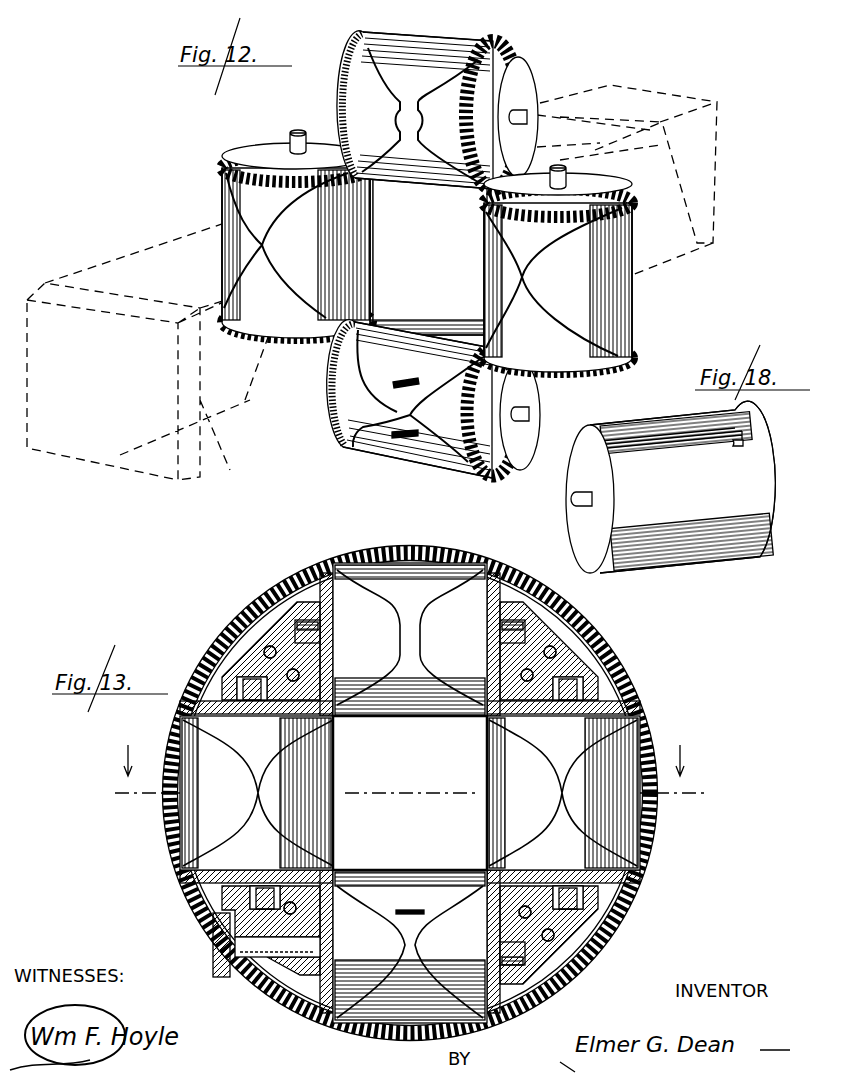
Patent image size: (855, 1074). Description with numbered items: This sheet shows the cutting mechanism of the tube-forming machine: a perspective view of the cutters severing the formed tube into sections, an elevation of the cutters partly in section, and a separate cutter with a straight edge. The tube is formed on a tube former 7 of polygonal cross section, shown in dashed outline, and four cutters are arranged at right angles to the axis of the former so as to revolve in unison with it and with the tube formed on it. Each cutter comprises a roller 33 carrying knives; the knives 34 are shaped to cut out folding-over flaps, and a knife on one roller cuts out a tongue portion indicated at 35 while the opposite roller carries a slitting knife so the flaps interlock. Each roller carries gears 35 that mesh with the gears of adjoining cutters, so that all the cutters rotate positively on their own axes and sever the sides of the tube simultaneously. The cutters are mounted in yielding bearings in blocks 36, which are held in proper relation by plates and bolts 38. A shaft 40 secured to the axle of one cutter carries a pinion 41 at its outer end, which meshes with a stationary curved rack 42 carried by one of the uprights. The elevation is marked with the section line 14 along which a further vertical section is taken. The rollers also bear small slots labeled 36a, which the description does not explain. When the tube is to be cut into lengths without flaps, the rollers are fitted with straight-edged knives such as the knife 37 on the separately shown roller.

In FIG. 12, the tube former 7 is at (80, 460).
In FIG. 13, the section line 14— 14 is at (406, 774).
In FIG. 12, the roller 33 is at (424, 266).
In FIG. 18, the roller 33 is at (681, 505).
In FIG. 13, the roller 33 is at (428, 793).
In FIG. 12, the knives 34 is at (242, 255).
In FIG. 12, the gears 35 is at (236, 160).
In FIG. 13, the gears 35 is at (322, 572).
In FIG. 13, the bearing block 36 is at (395, 836).
In FIG. 12, the slot 36a is at (355, 422).
In FIG. 13, the slot 36a is at (408, 908).
In FIG. 18, the straight edged knife 37 is at (745, 440).
In FIG. 13, the bolts 38 is at (265, 650).
In FIG. 13, the shaft 40 is at (310, 978).
In FIG. 13, the pinion 41 is at (215, 955).
In FIG. 13, the curved rack 42 is at (205, 920).